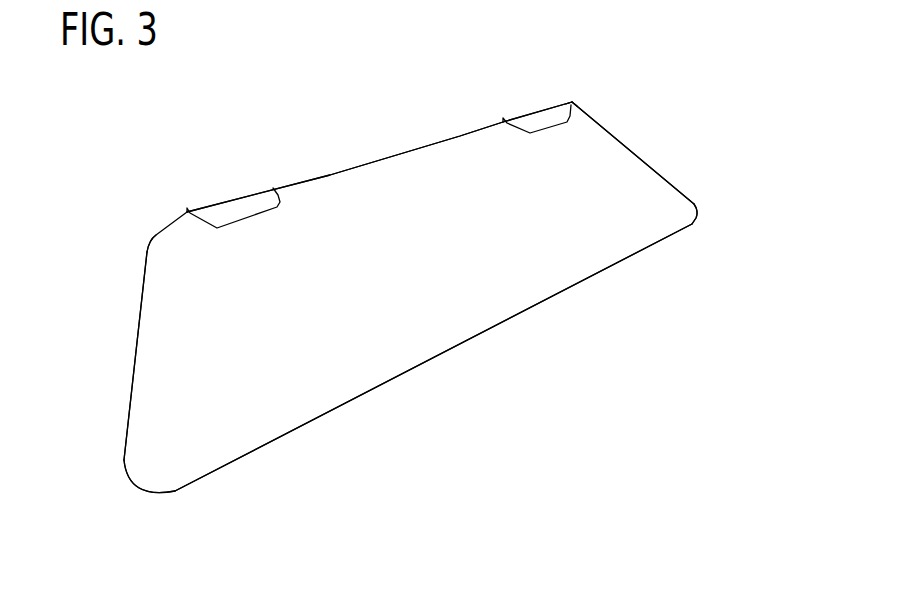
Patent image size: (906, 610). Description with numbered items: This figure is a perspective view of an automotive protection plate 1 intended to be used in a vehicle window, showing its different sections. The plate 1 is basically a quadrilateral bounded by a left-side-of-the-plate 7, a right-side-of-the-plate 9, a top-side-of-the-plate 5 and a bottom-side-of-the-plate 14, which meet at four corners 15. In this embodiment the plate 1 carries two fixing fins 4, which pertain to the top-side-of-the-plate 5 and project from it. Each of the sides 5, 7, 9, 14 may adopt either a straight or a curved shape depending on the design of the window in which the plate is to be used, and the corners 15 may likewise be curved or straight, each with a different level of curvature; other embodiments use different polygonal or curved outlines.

The automotive protection plate 1 is at (410, 297).
The fin 4 is at (220, 207).
The top-side-of-the-plate 5 is at (340, 170).
The left-side-of-the-plate 7 is at (140, 317).
The right-side-of-the-plate 9 is at (647, 168).
The bottom-side-of-the-plate 14 is at (453, 348).
The corner 15 is at (155, 253).